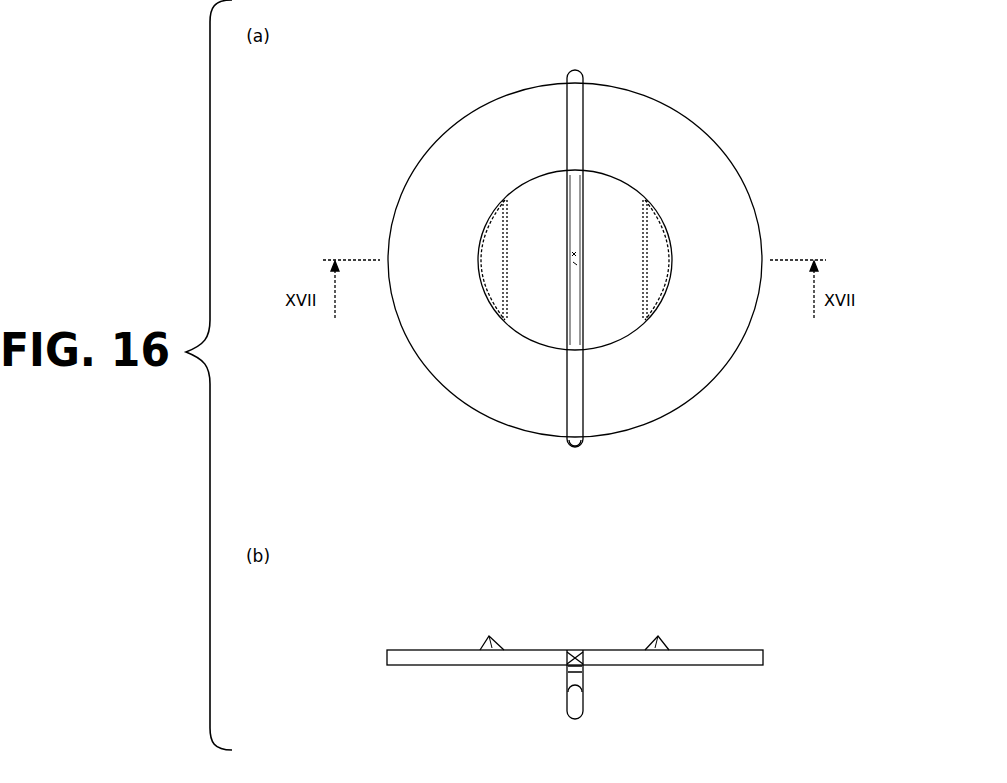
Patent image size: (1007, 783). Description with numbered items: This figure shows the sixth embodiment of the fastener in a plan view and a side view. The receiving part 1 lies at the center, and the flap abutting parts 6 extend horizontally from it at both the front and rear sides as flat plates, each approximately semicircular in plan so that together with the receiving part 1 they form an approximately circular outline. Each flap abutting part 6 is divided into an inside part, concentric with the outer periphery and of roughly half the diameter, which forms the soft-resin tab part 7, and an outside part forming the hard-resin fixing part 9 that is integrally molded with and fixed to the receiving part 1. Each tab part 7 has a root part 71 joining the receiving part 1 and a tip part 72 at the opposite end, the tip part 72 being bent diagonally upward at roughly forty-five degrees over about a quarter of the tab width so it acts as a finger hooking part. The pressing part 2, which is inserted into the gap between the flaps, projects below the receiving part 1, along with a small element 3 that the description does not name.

The receiving part 1 is at (566, 148).
The pressing part 2 is at (585, 700).
The fixing portion 3 is at (567, 673).
The flap abutting part 6 is at (575, 374).
The tab part 7 is at (640, 188).
The fixing part 9 is at (755, 210).
The root part 71 is at (590, 323).
The tip part 72 is at (647, 293).